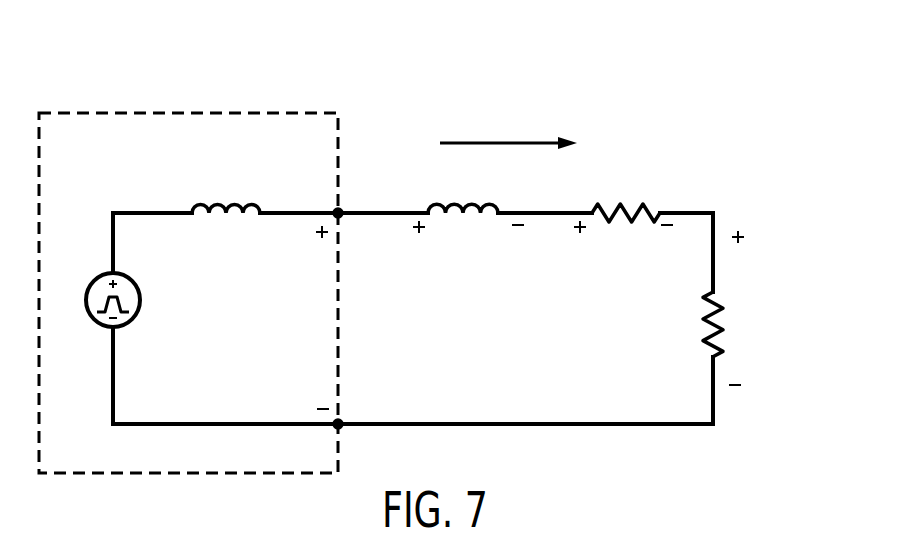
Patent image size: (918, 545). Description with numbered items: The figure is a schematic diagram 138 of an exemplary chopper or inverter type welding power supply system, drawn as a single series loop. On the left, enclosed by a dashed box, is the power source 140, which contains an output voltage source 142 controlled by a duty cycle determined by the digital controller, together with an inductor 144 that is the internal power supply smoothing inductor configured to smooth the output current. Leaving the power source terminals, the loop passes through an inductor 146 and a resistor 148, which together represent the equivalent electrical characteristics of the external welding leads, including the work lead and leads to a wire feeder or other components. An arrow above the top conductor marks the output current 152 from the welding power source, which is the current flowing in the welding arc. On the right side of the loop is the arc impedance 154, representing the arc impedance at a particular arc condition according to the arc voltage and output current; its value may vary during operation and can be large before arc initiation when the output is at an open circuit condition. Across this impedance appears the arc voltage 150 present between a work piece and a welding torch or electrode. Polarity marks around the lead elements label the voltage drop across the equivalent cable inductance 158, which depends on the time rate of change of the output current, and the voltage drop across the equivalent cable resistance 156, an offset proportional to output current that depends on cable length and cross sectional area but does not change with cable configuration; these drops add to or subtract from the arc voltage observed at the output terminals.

The schematic diagram 138 is at (686, 78).
The power source 140 is at (190, 112).
The output voltage source 142 is at (85, 246).
The inductor 144 is at (257, 207).
The inductor 146 is at (430, 205).
The resistor 148 is at (630, 204).
The arc voltage 150 is at (783, 311).
The output current 152 is at (494, 113).
The arc impedance 154 is at (617, 327).
The voltage drop across the equivalent cable resistance 156 is at (600, 263).
The voltage drop across the equivalent cable inductance 158 is at (420, 266).